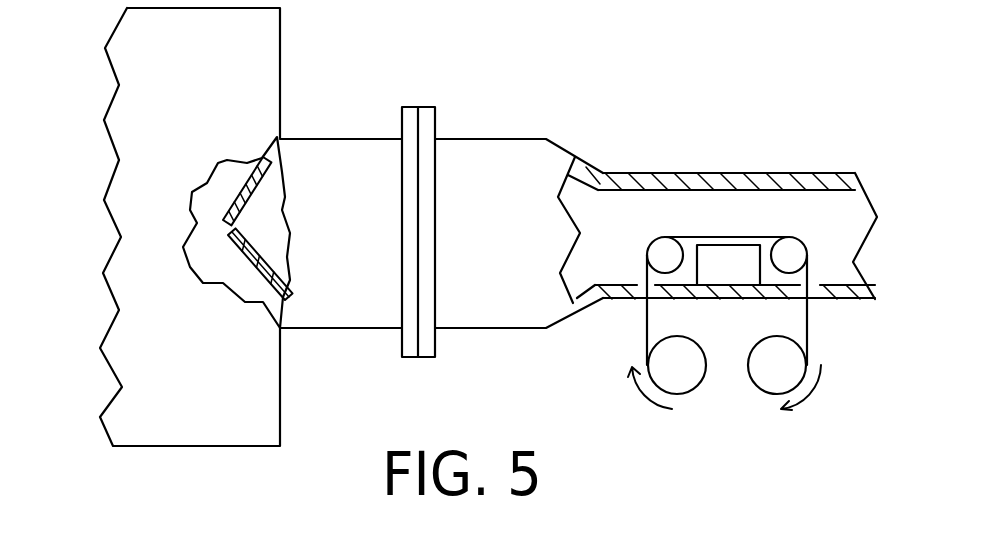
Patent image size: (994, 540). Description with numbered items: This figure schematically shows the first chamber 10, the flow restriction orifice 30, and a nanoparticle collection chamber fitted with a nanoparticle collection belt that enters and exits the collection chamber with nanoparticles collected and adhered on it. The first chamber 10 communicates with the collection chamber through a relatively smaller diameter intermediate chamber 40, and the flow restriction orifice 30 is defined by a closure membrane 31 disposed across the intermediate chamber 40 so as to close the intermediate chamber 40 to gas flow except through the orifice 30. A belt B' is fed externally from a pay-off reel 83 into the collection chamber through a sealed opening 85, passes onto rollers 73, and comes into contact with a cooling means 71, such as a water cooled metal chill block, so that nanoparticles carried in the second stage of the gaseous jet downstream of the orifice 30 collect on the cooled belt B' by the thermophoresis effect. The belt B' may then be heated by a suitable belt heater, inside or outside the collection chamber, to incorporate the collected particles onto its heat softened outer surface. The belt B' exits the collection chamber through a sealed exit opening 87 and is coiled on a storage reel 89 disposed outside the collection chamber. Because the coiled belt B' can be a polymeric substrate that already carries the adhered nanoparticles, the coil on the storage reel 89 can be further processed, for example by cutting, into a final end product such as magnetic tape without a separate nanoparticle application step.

The first chamber 10 is at (148, 365).
The flow restriction orifice 30 is at (237, 228).
The closure membrane 31 is at (286, 306).
The intermediate chamber 40 is at (512, 298).
The cooling means 71 is at (725, 253).
The rollers 73 is at (667, 252).
The pay-off reel 83 is at (678, 373).
The sealed opening 85 is at (642, 300).
The sealed exit opening 87 is at (812, 300).
The storage reel 89 is at (768, 375).
The belt B' is at (717, 198).